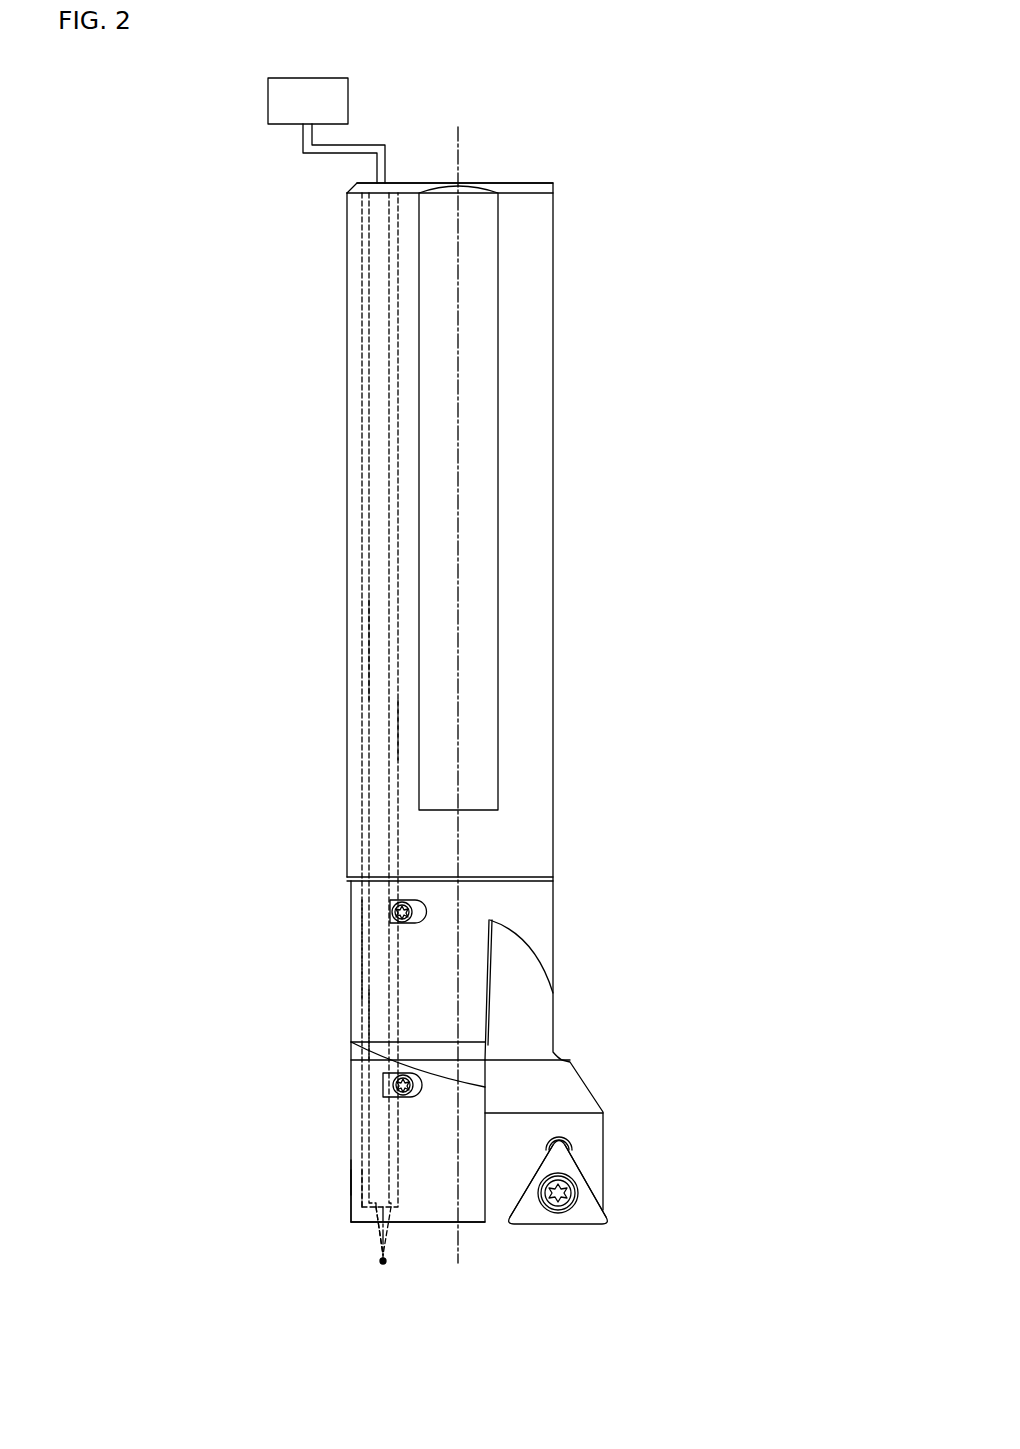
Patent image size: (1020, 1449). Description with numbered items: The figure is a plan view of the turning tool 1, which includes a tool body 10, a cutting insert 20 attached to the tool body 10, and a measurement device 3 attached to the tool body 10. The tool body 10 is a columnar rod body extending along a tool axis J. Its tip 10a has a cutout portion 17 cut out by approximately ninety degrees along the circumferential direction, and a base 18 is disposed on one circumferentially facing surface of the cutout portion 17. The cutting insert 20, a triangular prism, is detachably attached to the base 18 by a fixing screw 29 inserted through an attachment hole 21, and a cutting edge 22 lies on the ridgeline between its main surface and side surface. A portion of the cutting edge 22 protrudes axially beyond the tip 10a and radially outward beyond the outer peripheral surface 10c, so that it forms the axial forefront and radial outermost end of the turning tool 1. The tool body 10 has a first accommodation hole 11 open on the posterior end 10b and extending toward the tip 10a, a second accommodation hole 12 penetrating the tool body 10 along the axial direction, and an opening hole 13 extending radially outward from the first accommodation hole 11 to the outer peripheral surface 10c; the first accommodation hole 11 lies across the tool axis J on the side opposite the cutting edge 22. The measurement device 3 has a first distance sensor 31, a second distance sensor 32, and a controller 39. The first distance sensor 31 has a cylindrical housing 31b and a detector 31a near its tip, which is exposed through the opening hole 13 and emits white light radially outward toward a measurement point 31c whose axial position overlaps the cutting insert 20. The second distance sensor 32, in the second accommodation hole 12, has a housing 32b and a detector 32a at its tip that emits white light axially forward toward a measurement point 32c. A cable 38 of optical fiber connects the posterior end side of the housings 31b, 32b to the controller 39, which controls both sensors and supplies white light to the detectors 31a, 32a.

The turning tool 1 is at (765, 156).
The measurement device 3 is at (347, 755).
The tool body 10 is at (530, 448).
The tip 10a is at (415, 1222).
The posterior end 10b is at (527, 183).
The outer peripheral surface 10c is at (442, 1185).
The first accommodation hole 11 is at (365, 990).
The second accommodation hole 12 is at (400, 675).
The opening hole 13 is at (350, 1176).
The cutout portion 17 is at (530, 1130).
The base 18 is at (517, 1208).
The cutting insert 20 is at (595, 1206).
The attachment hole 21 is at (575, 1205).
The cutting edge 22 is at (610, 1225).
The fixing screw 29 is at (560, 1185).
The first distance sensor 31 is at (355, 1015).
The detector 31a is at (350, 1186).
The housing 31b is at (355, 1028).
The measurement point 31c is at (350, 1180).
The second distance sensor 32 is at (400, 688).
The detector 32a is at (373, 1243).
The housing 32b is at (400, 728).
The measurement point 32c is at (383, 1261).
The cable 38 is at (356, 152).
The controller 39 is at (268, 100).
The tool axis J is at (459, 145).